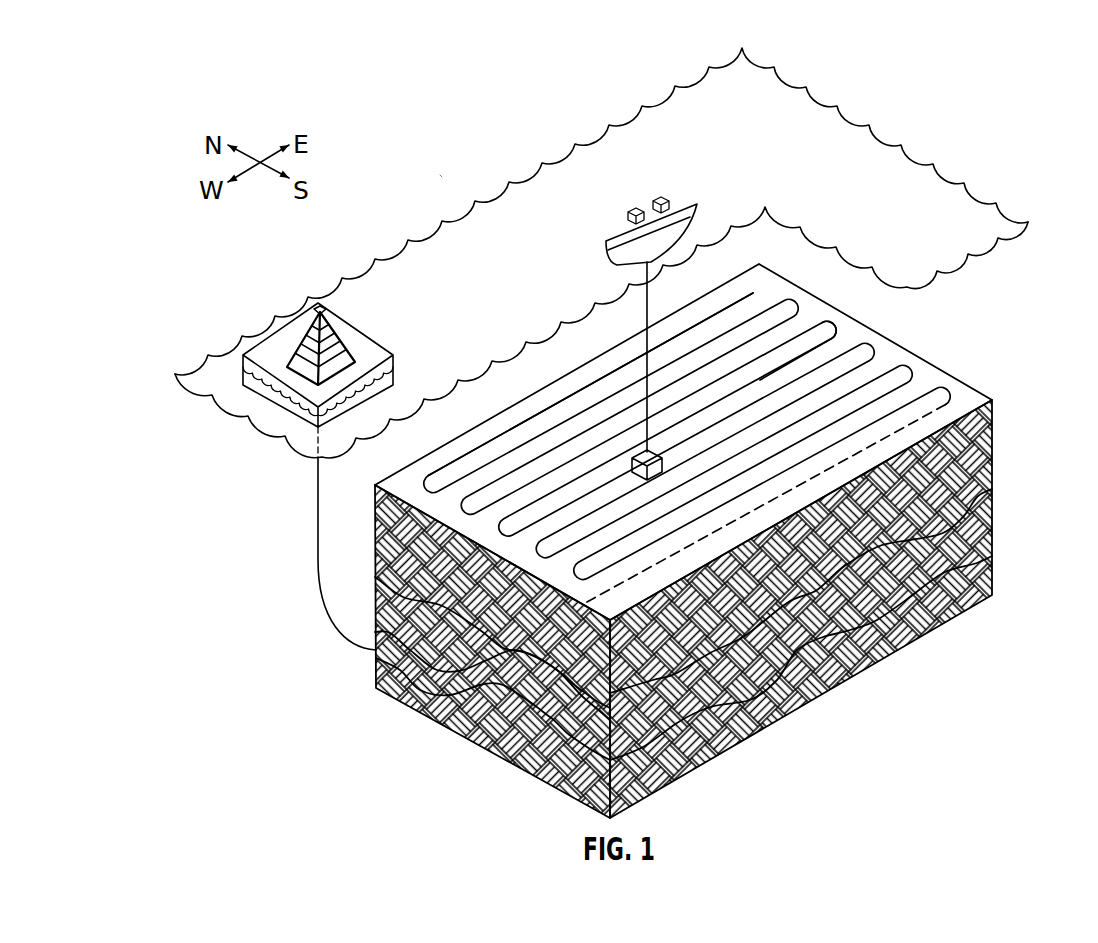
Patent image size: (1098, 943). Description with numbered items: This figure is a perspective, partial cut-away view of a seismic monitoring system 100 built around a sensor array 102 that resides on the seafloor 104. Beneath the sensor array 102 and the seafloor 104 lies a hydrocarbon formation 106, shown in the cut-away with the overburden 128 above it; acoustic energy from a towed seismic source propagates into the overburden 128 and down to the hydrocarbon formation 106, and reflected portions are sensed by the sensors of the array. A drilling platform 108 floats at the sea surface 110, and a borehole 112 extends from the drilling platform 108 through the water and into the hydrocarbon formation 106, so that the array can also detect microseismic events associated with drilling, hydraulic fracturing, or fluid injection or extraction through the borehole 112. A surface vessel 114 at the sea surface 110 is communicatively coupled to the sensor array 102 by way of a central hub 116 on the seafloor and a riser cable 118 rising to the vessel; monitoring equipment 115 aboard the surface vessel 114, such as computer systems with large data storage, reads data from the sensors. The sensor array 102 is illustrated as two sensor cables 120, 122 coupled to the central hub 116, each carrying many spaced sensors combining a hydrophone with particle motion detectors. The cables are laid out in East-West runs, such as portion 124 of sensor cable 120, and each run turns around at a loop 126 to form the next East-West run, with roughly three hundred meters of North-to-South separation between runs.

The seismic monitoring system 100 is at (431, 167).
The sensor array 102 is at (692, 541).
The seafloor 104 is at (975, 400).
The hydrocarbon formation 106 is at (983, 513).
The drilling platform 108 is at (285, 342).
The sea surface 110 is at (413, 276).
The borehole 112 is at (320, 588).
The surface vessel 114 is at (693, 205).
The monitoring equipment 115 is at (636, 217).
The central hub 116 is at (640, 455).
The riser cable 118 is at (649, 291).
The sensor cable 120 is at (830, 327).
The sensor cable 122 is at (867, 350).
The portion of sensor cable 124 is at (499, 440).
The loop 126 is at (378, 508).
The overburden 128 is at (982, 458).